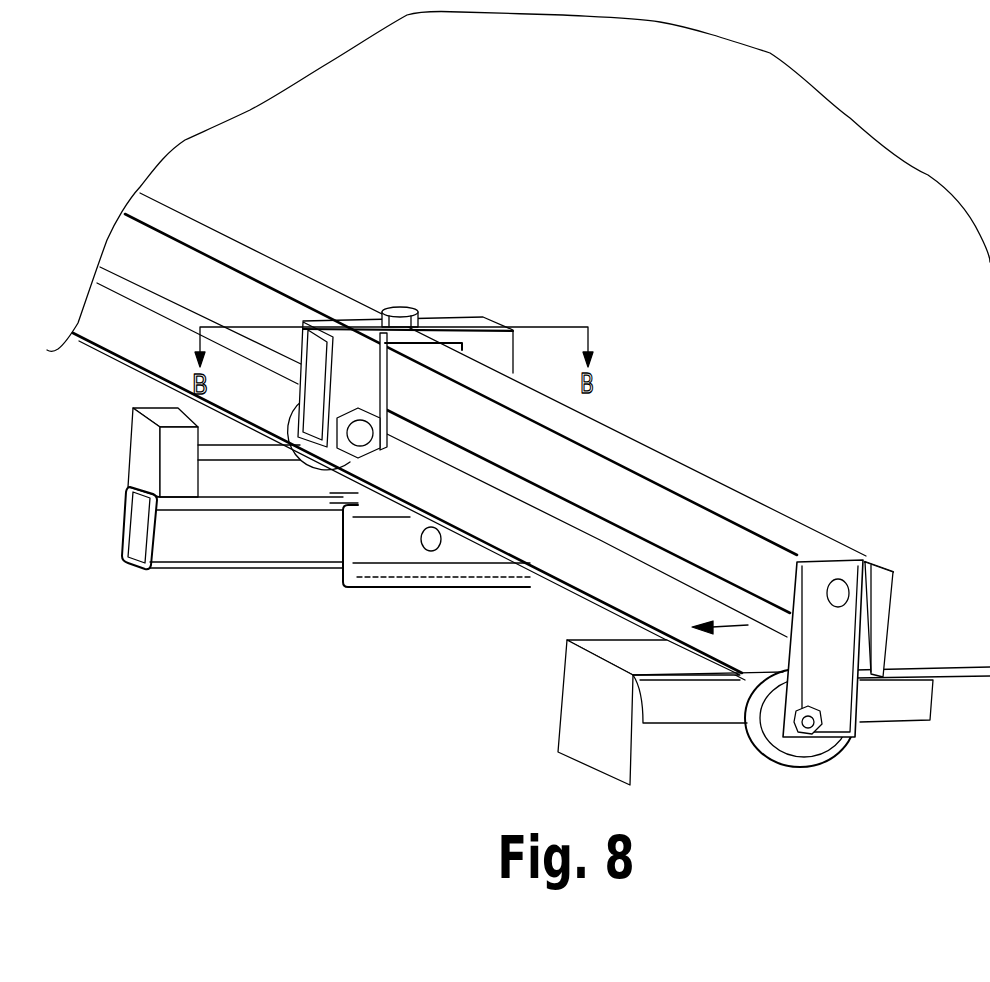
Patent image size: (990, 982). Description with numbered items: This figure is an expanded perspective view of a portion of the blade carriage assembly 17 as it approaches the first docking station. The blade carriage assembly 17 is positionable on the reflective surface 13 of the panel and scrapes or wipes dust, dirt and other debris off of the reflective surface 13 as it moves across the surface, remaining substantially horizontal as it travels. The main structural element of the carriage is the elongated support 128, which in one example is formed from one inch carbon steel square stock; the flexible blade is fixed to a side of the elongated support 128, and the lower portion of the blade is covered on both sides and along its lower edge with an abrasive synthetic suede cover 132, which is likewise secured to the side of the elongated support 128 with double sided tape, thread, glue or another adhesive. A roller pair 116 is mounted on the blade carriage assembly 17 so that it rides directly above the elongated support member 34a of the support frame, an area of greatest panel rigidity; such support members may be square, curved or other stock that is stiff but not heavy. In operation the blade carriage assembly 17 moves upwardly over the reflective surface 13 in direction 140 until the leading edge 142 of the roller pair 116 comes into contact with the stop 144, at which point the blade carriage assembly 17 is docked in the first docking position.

The reflective surface 13 is at (568, 571).
The blade carriage assembly 17 is at (637, 421).
The elongated support member 34a is at (387, 548).
The roller pair 116 is at (467, 317).
The elongated support 128 is at (693, 518).
The synthetic suede cover 132 is at (887, 623).
The direction 140 is at (738, 677).
The leading edge 142 is at (305, 448).
The stop 144 is at (200, 443).